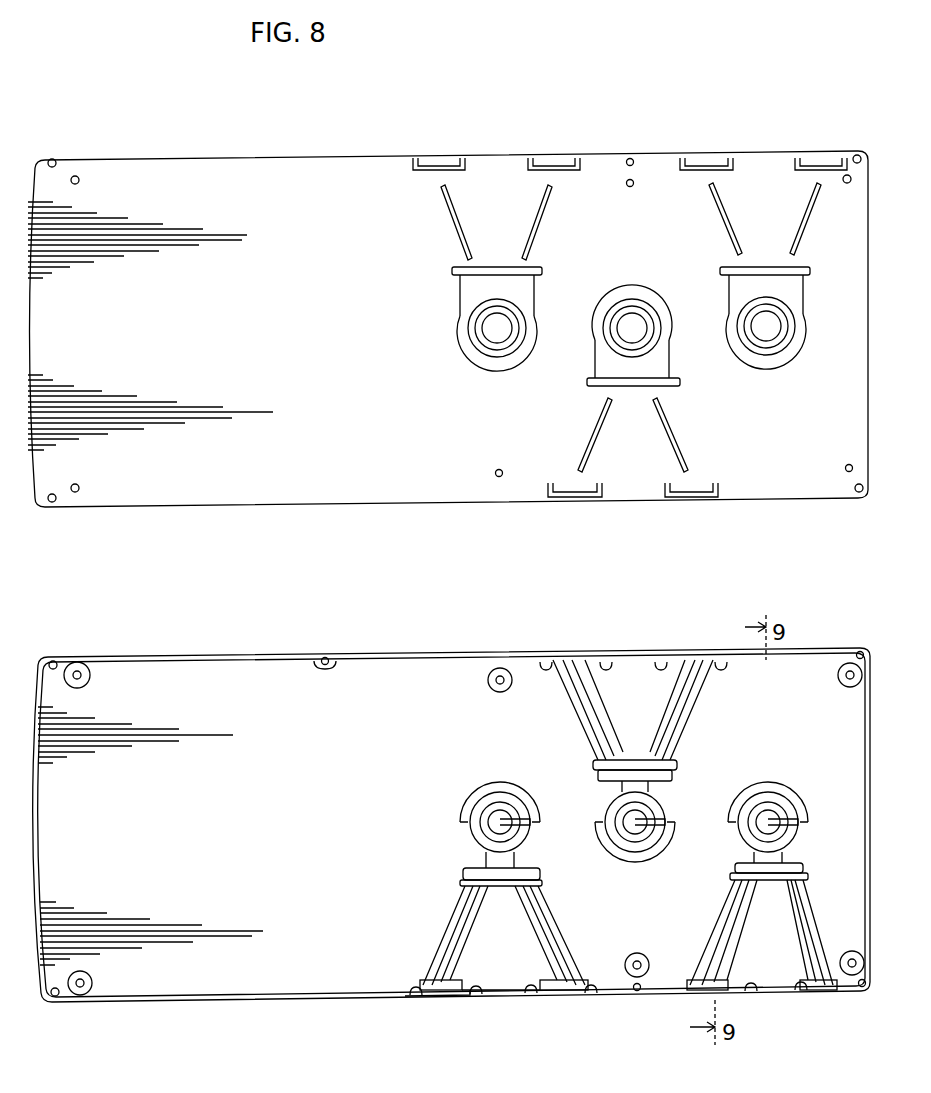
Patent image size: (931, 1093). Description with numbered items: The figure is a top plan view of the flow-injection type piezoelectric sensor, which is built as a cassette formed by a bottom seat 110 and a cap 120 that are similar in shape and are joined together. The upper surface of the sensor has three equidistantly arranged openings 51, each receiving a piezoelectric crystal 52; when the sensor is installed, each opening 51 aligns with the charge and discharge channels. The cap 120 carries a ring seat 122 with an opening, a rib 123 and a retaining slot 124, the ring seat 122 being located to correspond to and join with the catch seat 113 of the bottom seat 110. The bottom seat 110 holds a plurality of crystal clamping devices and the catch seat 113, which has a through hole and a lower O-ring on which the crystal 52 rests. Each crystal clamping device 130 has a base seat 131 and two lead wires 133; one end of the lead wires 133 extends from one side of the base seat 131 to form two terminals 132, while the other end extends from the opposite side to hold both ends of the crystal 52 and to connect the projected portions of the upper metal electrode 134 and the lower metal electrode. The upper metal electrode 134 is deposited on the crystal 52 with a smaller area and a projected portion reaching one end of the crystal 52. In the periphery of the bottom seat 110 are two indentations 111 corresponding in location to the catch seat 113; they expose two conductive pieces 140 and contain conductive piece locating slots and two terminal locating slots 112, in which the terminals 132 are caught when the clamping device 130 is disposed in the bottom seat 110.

The cap 120 is at (212, 483).
The retaining slot 124 is at (552, 158).
The rib 123 is at (535, 223).
The ring seat 122 is at (482, 340).
The opening 51 is at (497, 328).
The bottom seat 110 is at (172, 980).
The catch seat 113 is at (463, 798).
The lead wires 133 is at (473, 835).
The upper metal electrode 134 is at (517, 788).
The piezoelectric crystal 52 is at (487, 787).
The base seat 131 is at (477, 873).
The crystal clamping device 130 is at (542, 882).
The terminal locating slots 112 is at (455, 923).
The terminals 132 is at (455, 957).
The conductive pieces 140 is at (453, 1000).
The indentations 111 is at (460, 1000).